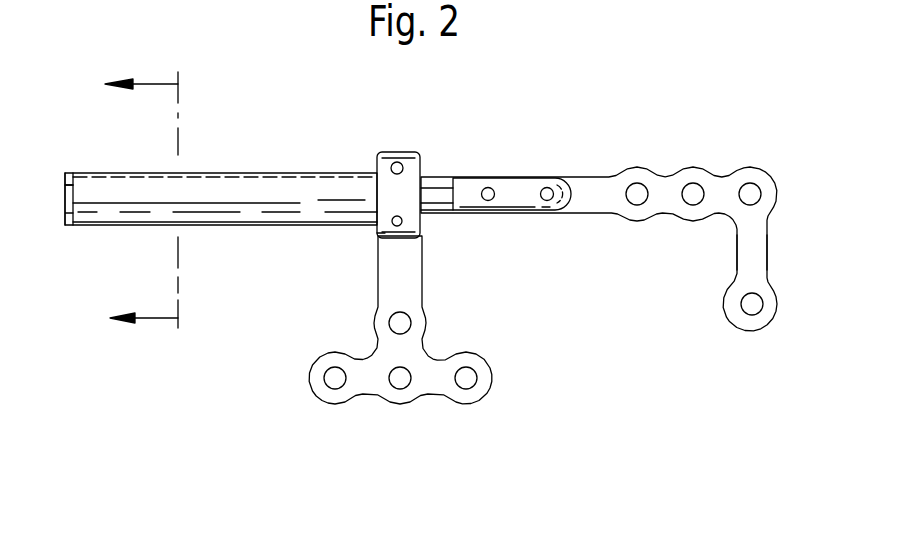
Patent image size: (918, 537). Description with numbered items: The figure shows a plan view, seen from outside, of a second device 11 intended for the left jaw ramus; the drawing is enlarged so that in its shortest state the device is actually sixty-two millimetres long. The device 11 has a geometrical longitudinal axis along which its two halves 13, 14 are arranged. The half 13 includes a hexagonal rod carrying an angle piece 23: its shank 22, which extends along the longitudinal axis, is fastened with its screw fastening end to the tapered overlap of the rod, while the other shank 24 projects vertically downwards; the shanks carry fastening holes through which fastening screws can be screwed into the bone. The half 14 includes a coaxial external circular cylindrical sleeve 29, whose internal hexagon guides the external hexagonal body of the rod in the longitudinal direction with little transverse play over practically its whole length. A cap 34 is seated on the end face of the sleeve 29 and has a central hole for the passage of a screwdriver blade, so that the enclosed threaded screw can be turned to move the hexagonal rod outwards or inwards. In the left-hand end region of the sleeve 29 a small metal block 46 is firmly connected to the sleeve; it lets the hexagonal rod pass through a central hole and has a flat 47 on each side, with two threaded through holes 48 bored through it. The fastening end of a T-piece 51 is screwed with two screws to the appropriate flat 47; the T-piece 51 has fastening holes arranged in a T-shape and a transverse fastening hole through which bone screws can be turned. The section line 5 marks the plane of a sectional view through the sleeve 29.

The section line 5- 5 is at (130, 202).
The device 11 is at (634, 348).
The half 13 is at (593, 178).
The half 14 is at (253, 174).
The shank 22 is at (681, 168).
The angle piece 23 is at (757, 166).
The shank 24 is at (768, 257).
The sleeve 29 is at (245, 208).
The cap 34 is at (66, 186).
The metal block 46 is at (378, 234).
The flat 47 is at (412, 172).
The threaded through hole 48 is at (397, 162).
The T-piece 51 is at (427, 320).